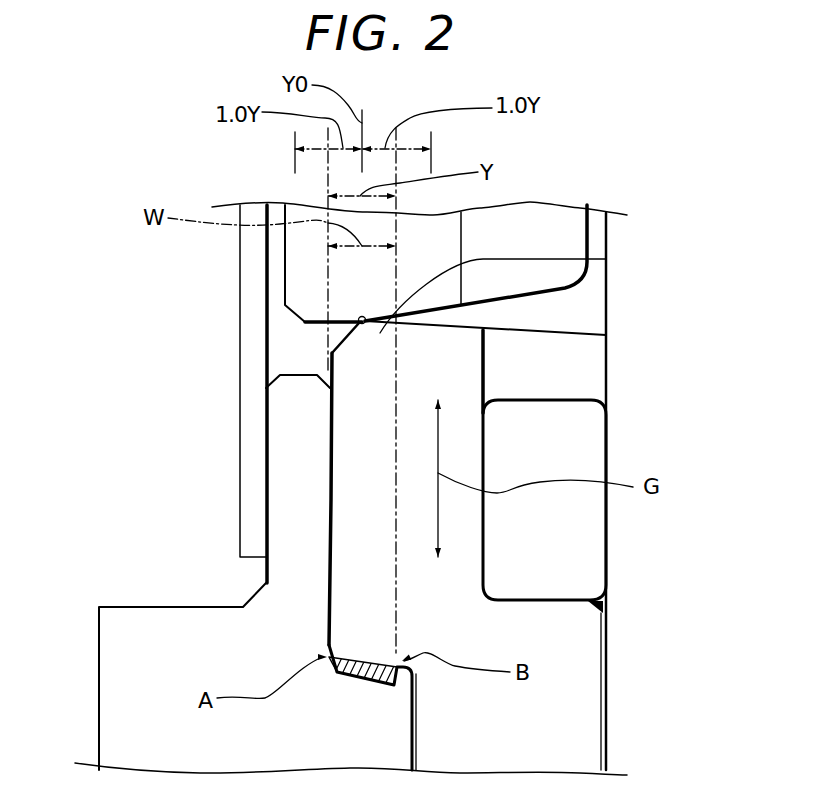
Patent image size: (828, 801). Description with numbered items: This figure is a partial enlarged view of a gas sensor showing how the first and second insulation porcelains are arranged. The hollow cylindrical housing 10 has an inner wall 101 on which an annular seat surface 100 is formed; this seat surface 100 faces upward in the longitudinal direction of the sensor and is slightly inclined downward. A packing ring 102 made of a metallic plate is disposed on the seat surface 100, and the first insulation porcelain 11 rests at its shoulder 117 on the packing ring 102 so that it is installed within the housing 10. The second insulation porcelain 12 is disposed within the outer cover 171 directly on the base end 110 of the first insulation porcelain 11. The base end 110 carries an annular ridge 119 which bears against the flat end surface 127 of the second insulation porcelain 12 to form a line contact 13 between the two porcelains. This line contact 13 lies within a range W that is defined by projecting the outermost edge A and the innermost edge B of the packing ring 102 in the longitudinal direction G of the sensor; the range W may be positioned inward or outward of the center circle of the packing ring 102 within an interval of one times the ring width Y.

The housing 10 is at (157, 673).
The first insulation porcelain 11 is at (563, 650).
The second insulation porcelain 12 is at (307, 270).
The line contact 13 is at (362, 332).
The annular seat surface 100 is at (380, 660).
The inner wall 101 is at (422, 732).
The packing ring 102 is at (352, 673).
The base end 110 is at (466, 322).
The shoulder 117 is at (363, 643).
The annular ridge 119 is at (606, 259).
The flat end surface 127 is at (305, 323).
The outer cover 171 is at (253, 417).